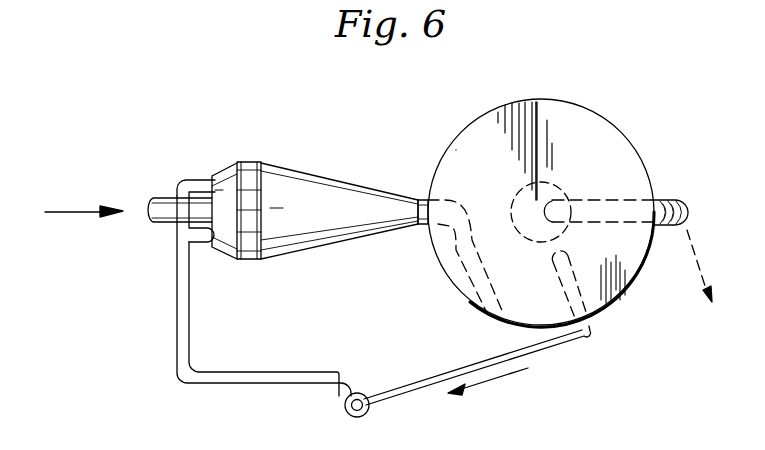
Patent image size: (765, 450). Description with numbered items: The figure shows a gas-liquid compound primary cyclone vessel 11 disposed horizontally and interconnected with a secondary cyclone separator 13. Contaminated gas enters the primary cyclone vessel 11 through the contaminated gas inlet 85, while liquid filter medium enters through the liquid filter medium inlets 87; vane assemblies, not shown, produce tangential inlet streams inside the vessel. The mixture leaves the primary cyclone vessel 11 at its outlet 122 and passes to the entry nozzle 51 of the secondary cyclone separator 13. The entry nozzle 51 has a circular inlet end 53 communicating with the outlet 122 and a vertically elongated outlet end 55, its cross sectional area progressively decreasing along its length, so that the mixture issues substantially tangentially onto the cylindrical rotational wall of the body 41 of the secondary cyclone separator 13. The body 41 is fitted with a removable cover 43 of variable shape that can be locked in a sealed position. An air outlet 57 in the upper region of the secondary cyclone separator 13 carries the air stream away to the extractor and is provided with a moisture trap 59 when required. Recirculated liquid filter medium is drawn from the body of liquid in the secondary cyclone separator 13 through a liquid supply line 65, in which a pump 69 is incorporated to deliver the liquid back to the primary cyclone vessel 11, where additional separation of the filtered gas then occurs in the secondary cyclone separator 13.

The gas-liquid compound primary cyclone vessel 11 is at (313, 160).
The secondary cyclone separator 13 is at (621, 121).
The body 41 is at (509, 103).
The removable cover 43 is at (496, 196).
The entry nozzle 51 is at (490, 300).
The inlet end 53 is at (443, 198).
The outlet end 55 is at (478, 298).
The air outlet 57 is at (630, 198).
The moisture trap 59 is at (558, 188).
The liquid supply line 65 is at (223, 385).
The pump 69 is at (350, 417).
The contaminated gas inlet 85 is at (228, 182).
The liquid filter medium inlets 87 is at (187, 178).
The outlet 122 is at (402, 228).